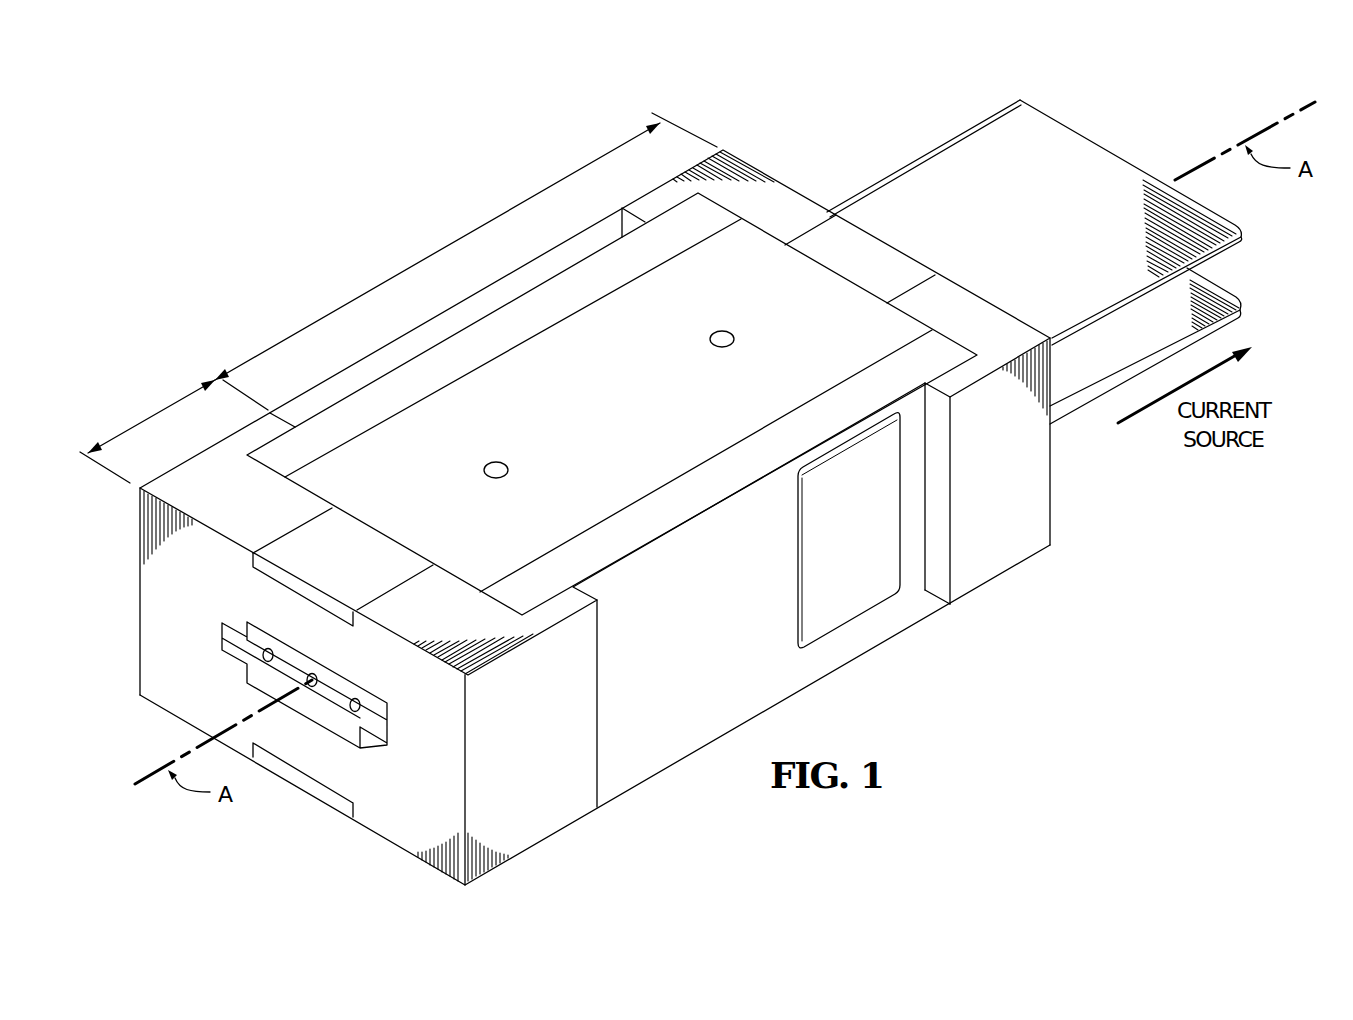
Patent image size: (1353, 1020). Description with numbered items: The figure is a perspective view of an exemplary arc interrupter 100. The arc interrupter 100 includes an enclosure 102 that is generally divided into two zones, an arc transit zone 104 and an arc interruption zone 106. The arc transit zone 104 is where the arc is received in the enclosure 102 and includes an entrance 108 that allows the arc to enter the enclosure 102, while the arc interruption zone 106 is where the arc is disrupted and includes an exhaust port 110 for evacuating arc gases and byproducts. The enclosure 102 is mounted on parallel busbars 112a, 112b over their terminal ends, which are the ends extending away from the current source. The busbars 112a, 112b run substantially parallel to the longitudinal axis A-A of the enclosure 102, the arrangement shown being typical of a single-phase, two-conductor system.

The arc interrupter 100 is at (330, 128).
The enclosure 102 is at (457, 392).
The arc transit zone 104 is at (445, 250).
The arc interruption zone 106 is at (152, 415).
The entrance 108 is at (827, 184).
The exhaust port 110 is at (216, 636).
The busbar 112a is at (1110, 121).
The busbar 112b is at (1217, 280).